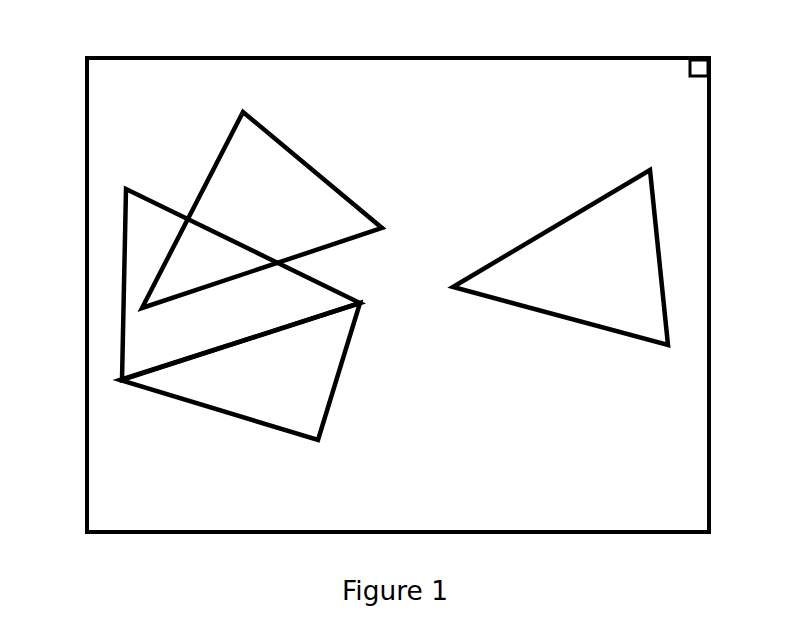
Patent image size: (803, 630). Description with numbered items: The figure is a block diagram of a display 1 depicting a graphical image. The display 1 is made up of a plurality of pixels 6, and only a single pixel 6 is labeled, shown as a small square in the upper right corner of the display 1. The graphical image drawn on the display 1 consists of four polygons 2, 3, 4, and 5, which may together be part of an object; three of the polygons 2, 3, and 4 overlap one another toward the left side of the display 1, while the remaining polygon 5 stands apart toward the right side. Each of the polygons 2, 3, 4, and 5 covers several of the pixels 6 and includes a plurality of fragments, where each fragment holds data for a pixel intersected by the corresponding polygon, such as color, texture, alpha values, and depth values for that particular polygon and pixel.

The display 1 is at (407, 14).
The polygon 2 is at (125, 268).
The polygon 3 is at (220, 152).
The polygon 4 is at (182, 400).
The polygon 5 is at (662, 278).
The pixel 6 is at (710, 67).